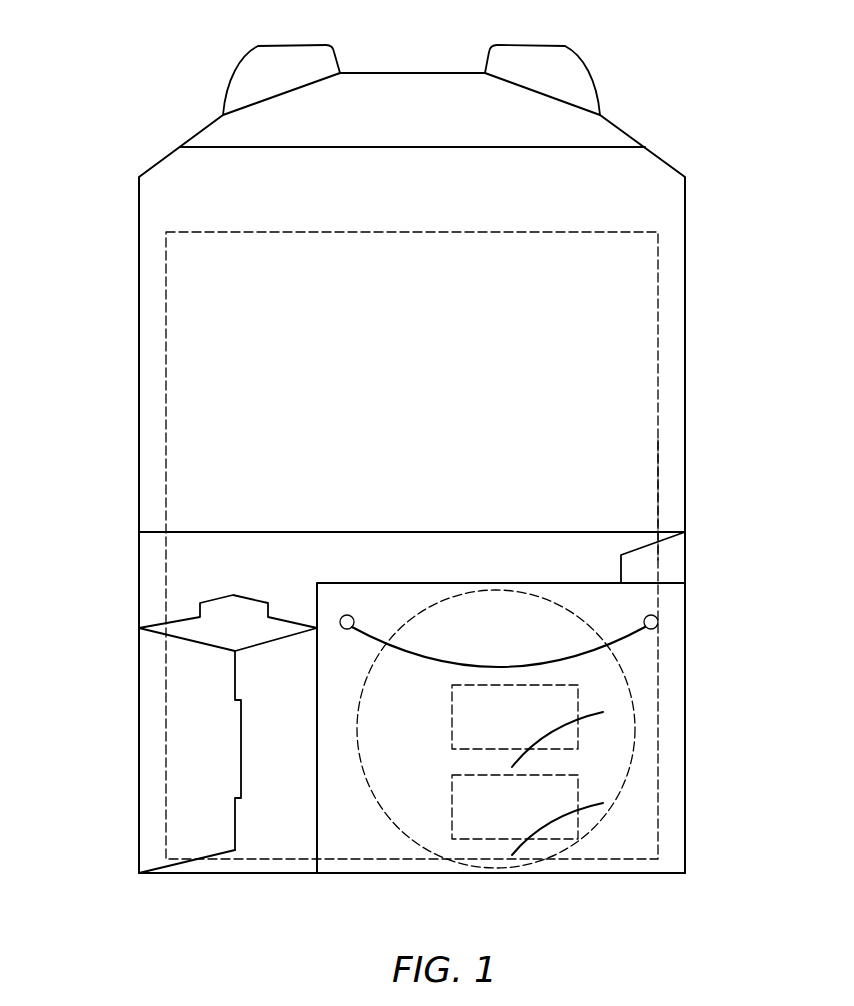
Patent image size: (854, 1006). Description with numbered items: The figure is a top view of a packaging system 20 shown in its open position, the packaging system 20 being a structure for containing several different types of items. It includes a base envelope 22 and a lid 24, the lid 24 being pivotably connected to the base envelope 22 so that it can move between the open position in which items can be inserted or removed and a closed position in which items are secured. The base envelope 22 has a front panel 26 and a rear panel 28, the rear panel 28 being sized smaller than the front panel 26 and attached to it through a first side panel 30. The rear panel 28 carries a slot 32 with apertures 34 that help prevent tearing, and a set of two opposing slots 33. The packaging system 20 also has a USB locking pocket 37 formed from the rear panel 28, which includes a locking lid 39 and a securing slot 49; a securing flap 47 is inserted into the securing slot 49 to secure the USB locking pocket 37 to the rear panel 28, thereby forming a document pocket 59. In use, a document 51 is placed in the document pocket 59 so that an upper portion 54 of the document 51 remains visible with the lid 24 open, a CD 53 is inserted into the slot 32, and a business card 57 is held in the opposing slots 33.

The packaging system 20 is at (155, 54).
The base envelope 22 is at (116, 576).
The lid 24 is at (116, 338).
The front panel 26 is at (597, 568).
The rear panel 28 is at (663, 860).
The first side panel 30 is at (680, 540).
The slot 32 is at (593, 650).
The opposing slots 33 is at (588, 720).
The apertures 34 is at (652, 628).
The USB locking pocket 37 is at (255, 845).
The locking lid 39 is at (180, 630).
The securing flap 47 is at (157, 858).
The securing slot 49 is at (240, 777).
The document 51 is at (658, 507).
The CD 53 is at (563, 850).
The upper portion 54 is at (658, 332).
The business card 57 is at (458, 838).
The document pocket 59 is at (555, 550).